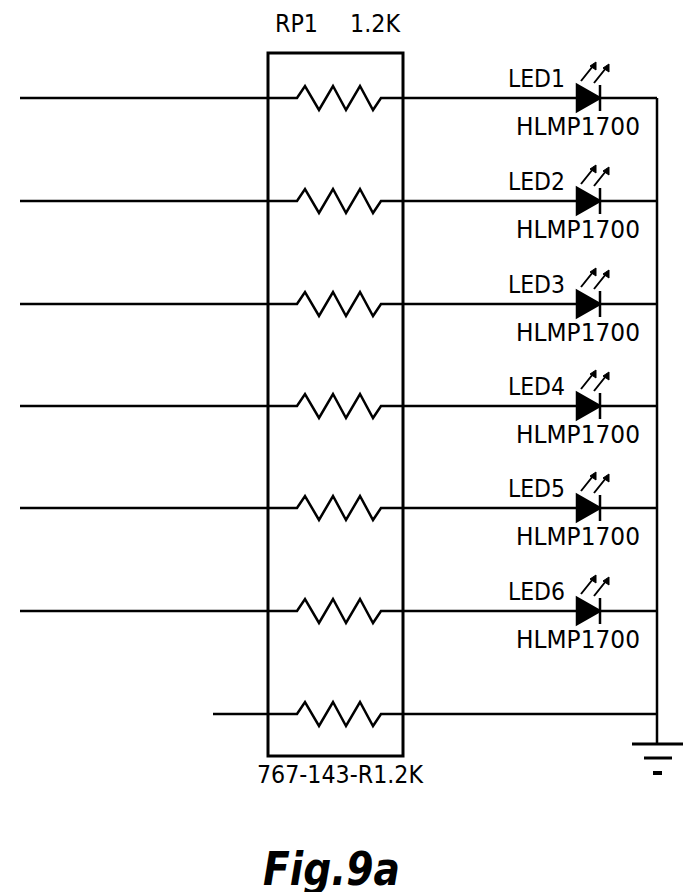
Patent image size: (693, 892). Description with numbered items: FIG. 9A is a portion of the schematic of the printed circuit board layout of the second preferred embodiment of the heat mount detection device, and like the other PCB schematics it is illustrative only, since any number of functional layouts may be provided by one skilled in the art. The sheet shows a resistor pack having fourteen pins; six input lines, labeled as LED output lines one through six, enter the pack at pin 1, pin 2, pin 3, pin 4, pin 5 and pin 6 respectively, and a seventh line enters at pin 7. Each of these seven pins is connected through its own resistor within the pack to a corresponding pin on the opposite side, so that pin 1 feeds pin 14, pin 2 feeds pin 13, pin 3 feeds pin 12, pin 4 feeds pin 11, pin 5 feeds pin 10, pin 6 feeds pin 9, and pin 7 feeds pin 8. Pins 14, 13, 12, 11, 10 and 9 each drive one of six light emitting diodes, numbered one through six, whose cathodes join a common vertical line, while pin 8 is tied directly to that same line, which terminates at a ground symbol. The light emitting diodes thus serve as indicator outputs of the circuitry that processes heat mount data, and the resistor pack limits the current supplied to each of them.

The resistor pack pin 1 (LED1 OUT input) 1 is at (144, 82).
The resistor pack pin 2 (LED2 OUT input) 2 is at (144, 185).
The resistor pack pin 3 (LED3 OUT input) 3 is at (144, 288).
The resistor pack pin 4 (LED4 OUT input) 4 is at (144, 390).
The resistor pack pin 5 (LED5 OUT input) 5 is at (144, 492).
The resistor pack pin 6 (LED6 OUT input) 6 is at (144, 595).
The resistor pack pin 7 is at (240, 698).
The resistor pack pin 8 (to ground) 8 is at (530, 696).
The resistor pack pin 9 (to LED6) 9 is at (490, 593).
The resistor pack pin 10 (to LED5) 10 is at (490, 490).
The resistor pack pin 11 (to LED4) 11 is at (490, 388).
The resistor pack pin 12 (to LED3) 12 is at (490, 286).
The resistor pack pin 13 (to LED2) 13 is at (490, 183).
The resistor pack pin 14 (to LED1) 14 is at (490, 80).